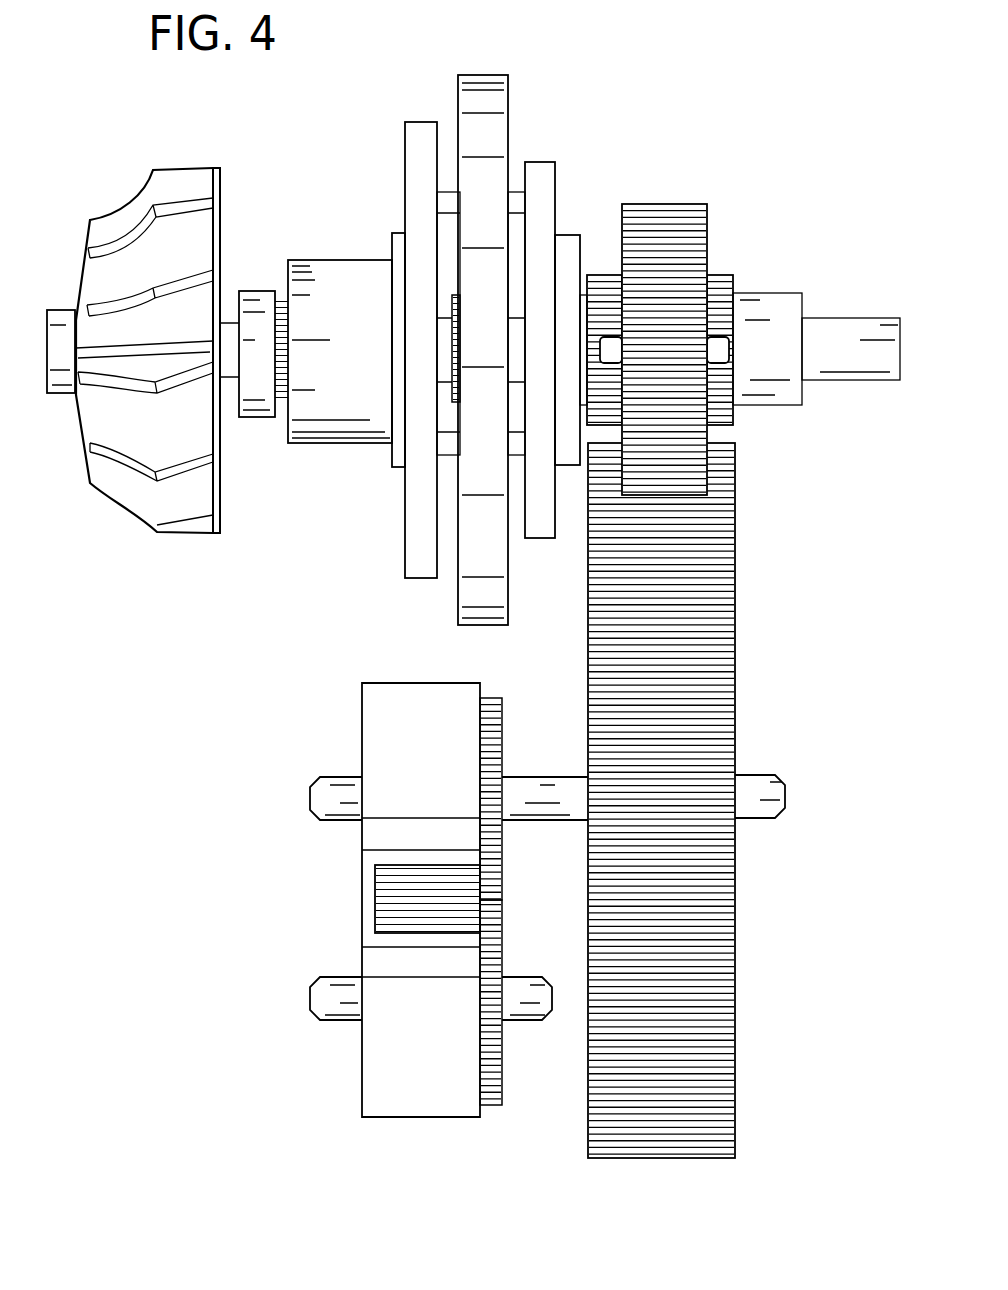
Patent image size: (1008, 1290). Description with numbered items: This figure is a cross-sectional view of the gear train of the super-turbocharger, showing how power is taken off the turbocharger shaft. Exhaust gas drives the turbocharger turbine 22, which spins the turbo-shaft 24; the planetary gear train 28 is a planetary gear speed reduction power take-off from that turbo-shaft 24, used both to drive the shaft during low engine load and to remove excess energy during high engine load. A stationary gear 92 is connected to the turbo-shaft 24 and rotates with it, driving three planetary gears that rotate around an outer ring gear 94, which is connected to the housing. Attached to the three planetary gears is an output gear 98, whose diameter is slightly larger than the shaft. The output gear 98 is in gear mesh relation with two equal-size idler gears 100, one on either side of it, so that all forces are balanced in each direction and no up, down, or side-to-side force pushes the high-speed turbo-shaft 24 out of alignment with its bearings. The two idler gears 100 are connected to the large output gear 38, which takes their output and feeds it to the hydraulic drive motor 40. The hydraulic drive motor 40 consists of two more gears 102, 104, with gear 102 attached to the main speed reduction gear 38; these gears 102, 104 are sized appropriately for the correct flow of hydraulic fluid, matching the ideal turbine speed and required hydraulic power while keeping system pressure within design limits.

The turbocharger turbine 22 is at (130, 176).
The turbo-shaft 24 is at (226, 323).
The planetary gear train 28 is at (736, 646).
The large output gear 38 is at (730, 636).
The hydraulic drive motor 40 is at (389, 900).
The stationary gear 92 is at (453, 347).
The outer ring gear 94 is at (495, 103).
The output gear 98 is at (706, 316).
The idler gears 100 is at (707, 226).
The gear 102 is at (503, 737).
The gear 104 is at (503, 1062).